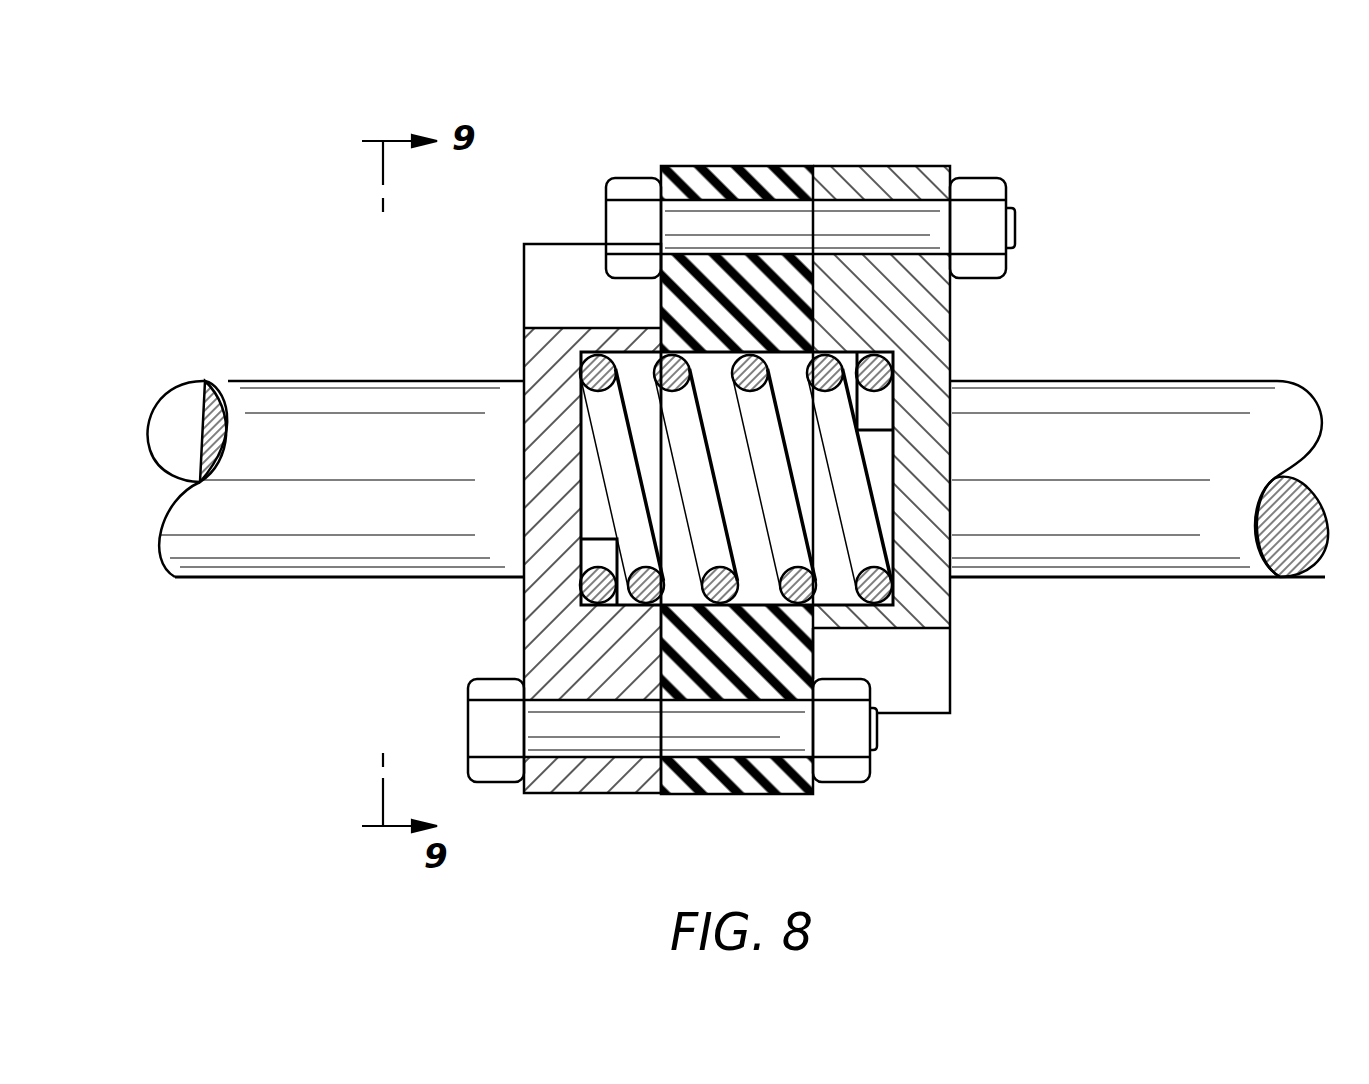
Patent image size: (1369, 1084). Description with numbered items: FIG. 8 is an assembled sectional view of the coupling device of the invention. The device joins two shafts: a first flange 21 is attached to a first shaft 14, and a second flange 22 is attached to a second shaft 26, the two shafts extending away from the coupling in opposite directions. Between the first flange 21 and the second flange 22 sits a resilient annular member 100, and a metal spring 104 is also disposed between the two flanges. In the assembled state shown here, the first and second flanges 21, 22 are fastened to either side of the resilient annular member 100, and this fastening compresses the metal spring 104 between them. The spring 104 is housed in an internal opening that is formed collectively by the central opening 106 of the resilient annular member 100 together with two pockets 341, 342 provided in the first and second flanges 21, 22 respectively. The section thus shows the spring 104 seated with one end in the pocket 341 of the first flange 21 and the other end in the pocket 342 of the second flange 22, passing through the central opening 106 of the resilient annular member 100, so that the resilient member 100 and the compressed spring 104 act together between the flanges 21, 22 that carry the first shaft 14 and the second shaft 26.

The first shaft 14 is at (1123, 578).
The first flange 21 is at (950, 322).
The second flange 22 is at (523, 352).
The second shaft 26 is at (285, 381).
The resilient annular member 100 is at (729, 166).
The metal spring 104 is at (637, 607).
The central opening 106 is at (745, 558).
The pocket 341 is at (847, 363).
The pocket 342 is at (598, 523).